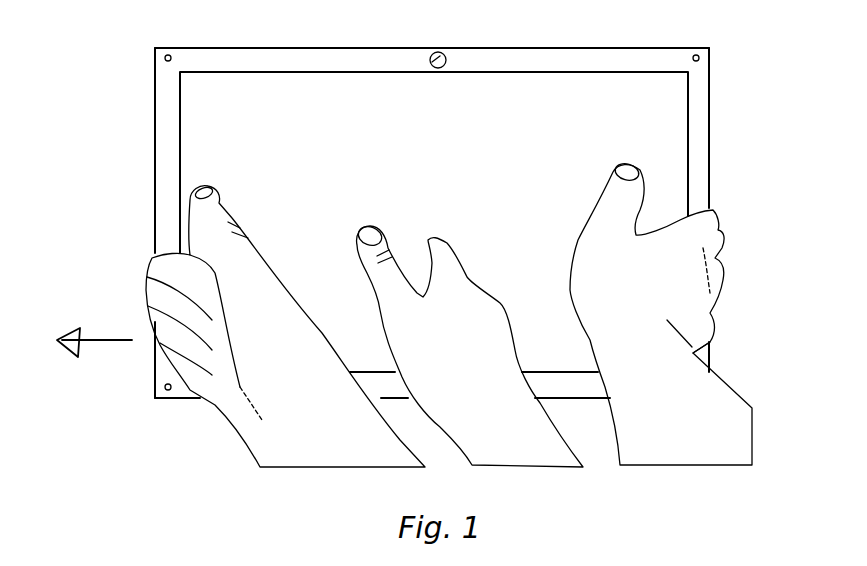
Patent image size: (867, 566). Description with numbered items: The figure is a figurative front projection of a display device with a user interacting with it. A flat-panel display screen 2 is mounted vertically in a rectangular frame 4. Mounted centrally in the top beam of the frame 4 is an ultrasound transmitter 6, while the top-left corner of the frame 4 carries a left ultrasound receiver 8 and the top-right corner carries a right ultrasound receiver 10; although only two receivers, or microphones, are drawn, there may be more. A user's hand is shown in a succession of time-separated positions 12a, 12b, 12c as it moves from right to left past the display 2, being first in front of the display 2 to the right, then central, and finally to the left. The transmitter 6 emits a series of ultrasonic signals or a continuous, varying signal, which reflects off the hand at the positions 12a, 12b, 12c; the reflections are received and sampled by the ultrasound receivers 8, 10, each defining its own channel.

The flat-panel display screen 2 is at (525, 176).
The rectangular frame 4 is at (168, 148).
The ultrasound transmitter 6 is at (436, 52).
The left ultrasound receiver 8 is at (170, 54).
The right ultrasound receiver 10 is at (697, 54).
The hand position 12a is at (653, 303).
The hand position 12b is at (456, 348).
The hand position 12c is at (303, 382).